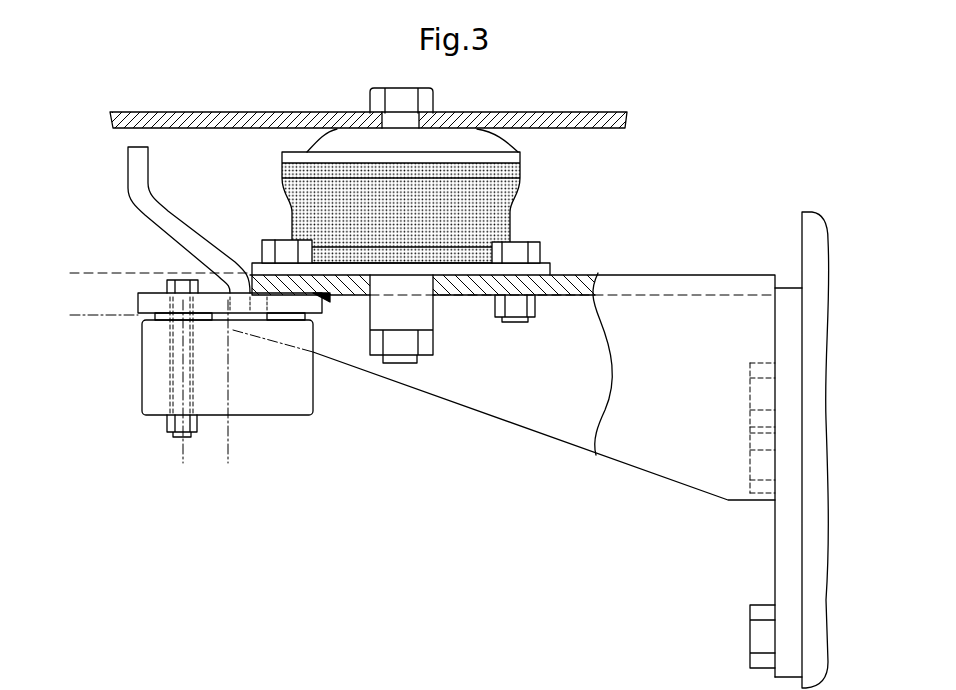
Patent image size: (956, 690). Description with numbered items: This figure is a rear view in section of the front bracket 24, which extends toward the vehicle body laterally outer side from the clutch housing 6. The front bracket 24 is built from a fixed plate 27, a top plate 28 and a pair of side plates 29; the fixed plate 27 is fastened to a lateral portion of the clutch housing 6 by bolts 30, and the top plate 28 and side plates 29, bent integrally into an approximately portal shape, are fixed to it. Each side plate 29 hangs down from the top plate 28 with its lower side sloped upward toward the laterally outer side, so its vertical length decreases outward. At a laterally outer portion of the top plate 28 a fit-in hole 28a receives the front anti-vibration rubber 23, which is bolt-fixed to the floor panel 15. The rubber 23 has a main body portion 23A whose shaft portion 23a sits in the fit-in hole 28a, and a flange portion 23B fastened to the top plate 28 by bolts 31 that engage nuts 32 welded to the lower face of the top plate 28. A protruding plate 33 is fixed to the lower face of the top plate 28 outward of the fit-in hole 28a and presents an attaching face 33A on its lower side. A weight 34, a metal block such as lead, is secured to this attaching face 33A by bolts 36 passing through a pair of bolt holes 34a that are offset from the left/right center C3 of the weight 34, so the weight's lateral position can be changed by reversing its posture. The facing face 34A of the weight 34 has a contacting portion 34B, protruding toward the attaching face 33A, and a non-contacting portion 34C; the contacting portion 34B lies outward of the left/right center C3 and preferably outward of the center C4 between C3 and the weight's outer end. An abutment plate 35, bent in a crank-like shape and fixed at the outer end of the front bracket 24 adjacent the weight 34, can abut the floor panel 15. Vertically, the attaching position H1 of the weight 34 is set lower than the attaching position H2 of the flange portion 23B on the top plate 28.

The clutch housing 6 is at (807, 238).
The floor panel 15 is at (213, 111).
The front anti-vibration rubber 23 is at (401, 244).
The main body portion 23A is at (297, 203).
The flange portion 23B is at (460, 295).
The shaft portion 23a is at (397, 315).
The front bracket 24 is at (517, 430).
The fixed plate 27 is at (778, 555).
The top plate 28 is at (600, 272).
The fit-in hole 28a is at (463, 280).
The side plates 29 is at (647, 442).
The bolts 30 is at (752, 450).
The bolts 31 is at (280, 242).
The nuts 32 is at (533, 313).
The protruding plate 33 is at (143, 298).
The attaching face 33A is at (238, 321).
The weight 34 is at (208, 348).
The facing face 34A is at (208, 319).
The contacting portion 34B is at (163, 315).
The non-contacting portion 34C is at (147, 307).
The bolt holes 34a is at (170, 390).
The abutment plate 35 is at (144, 161).
The bolts 36 is at (181, 279).
The attaching position of the weight H1 is at (86, 315).
The attaching position of the front anti-vibration rubber H2 is at (142, 273).
The left/right center of the weight C3 is at (228, 397).
The center between C3 and outer end C4 is at (185, 397).